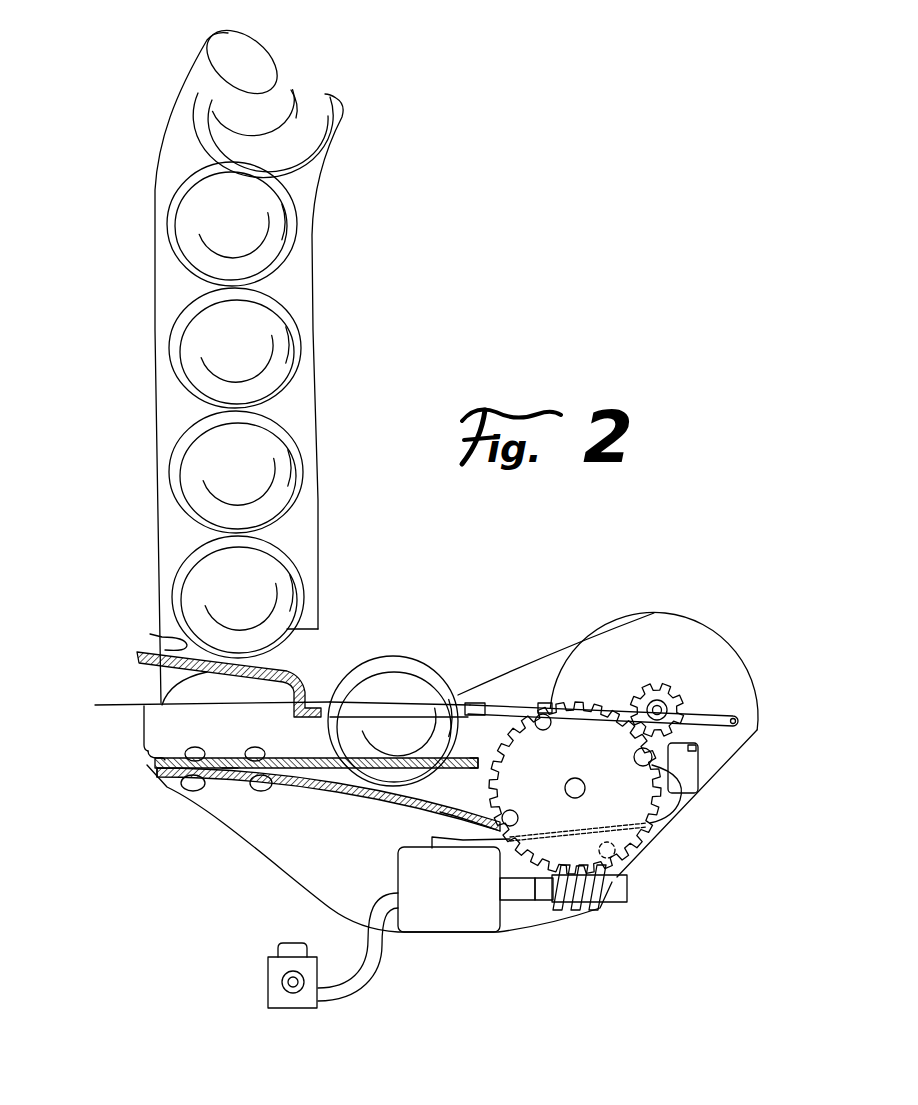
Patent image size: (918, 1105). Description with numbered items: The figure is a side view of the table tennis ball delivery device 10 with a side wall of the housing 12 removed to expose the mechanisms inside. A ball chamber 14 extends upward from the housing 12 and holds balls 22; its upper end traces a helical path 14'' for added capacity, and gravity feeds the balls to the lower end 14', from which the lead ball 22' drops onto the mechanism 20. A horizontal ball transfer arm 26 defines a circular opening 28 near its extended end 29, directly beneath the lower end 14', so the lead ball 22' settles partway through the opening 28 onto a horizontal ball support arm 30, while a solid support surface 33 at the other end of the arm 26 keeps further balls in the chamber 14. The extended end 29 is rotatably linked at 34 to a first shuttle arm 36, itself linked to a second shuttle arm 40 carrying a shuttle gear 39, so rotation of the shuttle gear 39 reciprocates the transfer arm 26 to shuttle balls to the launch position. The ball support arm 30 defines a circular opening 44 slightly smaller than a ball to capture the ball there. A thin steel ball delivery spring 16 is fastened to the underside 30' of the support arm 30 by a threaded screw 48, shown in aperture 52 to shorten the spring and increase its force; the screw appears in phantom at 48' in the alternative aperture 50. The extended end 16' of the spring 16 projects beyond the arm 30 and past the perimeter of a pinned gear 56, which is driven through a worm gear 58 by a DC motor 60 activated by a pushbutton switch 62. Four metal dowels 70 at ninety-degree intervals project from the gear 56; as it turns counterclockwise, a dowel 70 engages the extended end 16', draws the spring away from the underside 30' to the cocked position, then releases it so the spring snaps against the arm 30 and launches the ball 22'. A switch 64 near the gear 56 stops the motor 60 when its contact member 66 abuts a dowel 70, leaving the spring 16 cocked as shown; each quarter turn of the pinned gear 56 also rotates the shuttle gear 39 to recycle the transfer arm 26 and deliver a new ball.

The table tennis ball delivery device 10 is at (648, 598).
The housing 12 is at (703, 640).
The ball chamber 14 is at (280, 368).
The lower end 14' is at (288, 597).
The helical path 14'' is at (314, 93).
The ball delivery spring 16 is at (328, 810).
The extended end 16' is at (417, 854).
The mechanism for flexing and releasing the spring 20 is at (310, 682).
The balls 22 is at (281, 357).
The lead ball 22' is at (406, 702).
The ball transfer arm 26 is at (95, 705).
The circular opening 28 is at (323, 722).
The extended end 29 is at (460, 707).
The ball support arm 30 is at (108, 771).
The underside 30' is at (467, 784).
The solid support surface 33 is at (150, 634).
The rotatable link 34 is at (487, 705).
The first shuttle arm 36 is at (528, 705).
The shuttle gear 39 is at (673, 693).
The second shuttle arm 40 is at (720, 732).
The circular opening 44 is at (337, 783).
The threaded screw 48 is at (242, 824).
The screw in phantom 48' is at (161, 824).
The mounting aperture 50 is at (153, 773).
The mounting aperture 52 is at (230, 768).
The pinned gear 56 is at (658, 848).
The worm gear 58 is at (600, 910).
The DC motor 60 is at (455, 915).
The pushbutton switch 62 is at (293, 1008).
The switch 64 is at (696, 788).
The contact member 66 is at (733, 712).
The metal dowels 70 is at (547, 727).